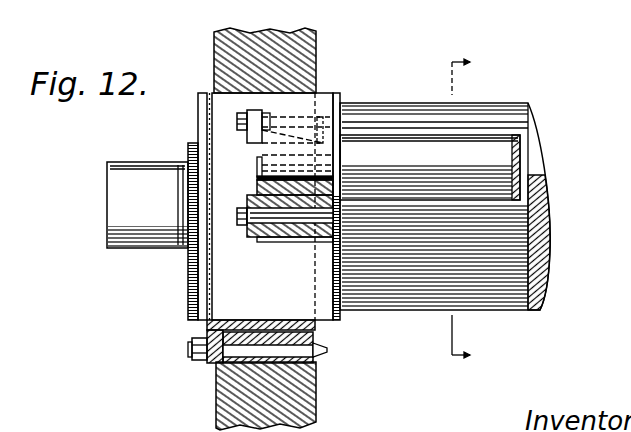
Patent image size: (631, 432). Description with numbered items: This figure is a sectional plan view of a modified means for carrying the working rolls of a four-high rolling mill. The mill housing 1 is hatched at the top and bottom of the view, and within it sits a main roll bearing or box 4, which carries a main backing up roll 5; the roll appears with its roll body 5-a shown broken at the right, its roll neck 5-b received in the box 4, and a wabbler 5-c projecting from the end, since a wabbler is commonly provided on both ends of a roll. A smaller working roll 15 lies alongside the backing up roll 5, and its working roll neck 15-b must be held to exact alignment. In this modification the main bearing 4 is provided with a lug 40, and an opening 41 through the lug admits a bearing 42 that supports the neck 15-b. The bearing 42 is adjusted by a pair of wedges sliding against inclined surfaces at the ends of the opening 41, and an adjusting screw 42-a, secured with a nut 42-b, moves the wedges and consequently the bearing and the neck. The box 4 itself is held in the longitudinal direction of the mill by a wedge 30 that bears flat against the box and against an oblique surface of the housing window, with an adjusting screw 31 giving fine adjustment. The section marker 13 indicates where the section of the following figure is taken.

The mill housing 1 is at (296, 57).
The main roll bearing box 4 is at (320, 312).
The main backing up roll 5 is at (526, 121).
The roll body 5-a is at (542, 238).
The roll neck 5-b is at (190, 262).
The wabbler 5-c is at (120, 235).
The compression spring 13 is at (456, 210).
The working roll 15 is at (505, 156).
The working roll neck 15-b is at (257, 160).
The wedge 30 is at (207, 325).
The adjusting screw 31 is at (188, 348).
The lug 40 is at (324, 101).
The opening 41 is at (283, 246).
The bearing 42 is at (260, 185).
The adjusting screw 42-a is at (262, 108).
The nut 42-b is at (237, 121).